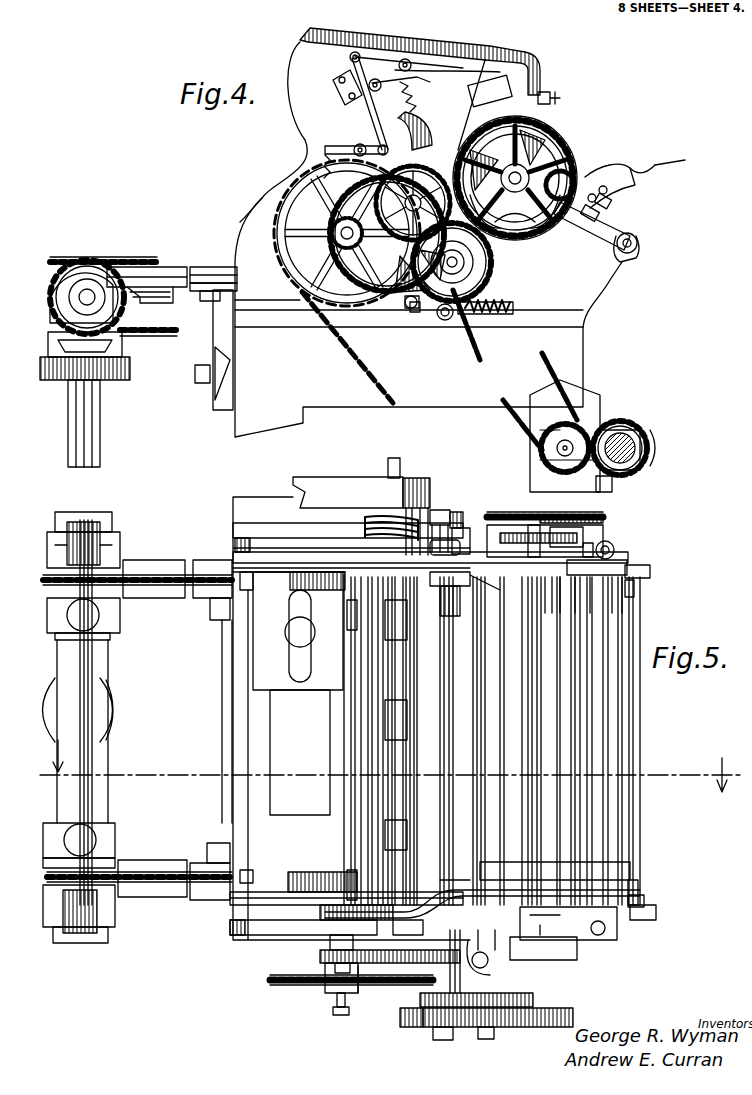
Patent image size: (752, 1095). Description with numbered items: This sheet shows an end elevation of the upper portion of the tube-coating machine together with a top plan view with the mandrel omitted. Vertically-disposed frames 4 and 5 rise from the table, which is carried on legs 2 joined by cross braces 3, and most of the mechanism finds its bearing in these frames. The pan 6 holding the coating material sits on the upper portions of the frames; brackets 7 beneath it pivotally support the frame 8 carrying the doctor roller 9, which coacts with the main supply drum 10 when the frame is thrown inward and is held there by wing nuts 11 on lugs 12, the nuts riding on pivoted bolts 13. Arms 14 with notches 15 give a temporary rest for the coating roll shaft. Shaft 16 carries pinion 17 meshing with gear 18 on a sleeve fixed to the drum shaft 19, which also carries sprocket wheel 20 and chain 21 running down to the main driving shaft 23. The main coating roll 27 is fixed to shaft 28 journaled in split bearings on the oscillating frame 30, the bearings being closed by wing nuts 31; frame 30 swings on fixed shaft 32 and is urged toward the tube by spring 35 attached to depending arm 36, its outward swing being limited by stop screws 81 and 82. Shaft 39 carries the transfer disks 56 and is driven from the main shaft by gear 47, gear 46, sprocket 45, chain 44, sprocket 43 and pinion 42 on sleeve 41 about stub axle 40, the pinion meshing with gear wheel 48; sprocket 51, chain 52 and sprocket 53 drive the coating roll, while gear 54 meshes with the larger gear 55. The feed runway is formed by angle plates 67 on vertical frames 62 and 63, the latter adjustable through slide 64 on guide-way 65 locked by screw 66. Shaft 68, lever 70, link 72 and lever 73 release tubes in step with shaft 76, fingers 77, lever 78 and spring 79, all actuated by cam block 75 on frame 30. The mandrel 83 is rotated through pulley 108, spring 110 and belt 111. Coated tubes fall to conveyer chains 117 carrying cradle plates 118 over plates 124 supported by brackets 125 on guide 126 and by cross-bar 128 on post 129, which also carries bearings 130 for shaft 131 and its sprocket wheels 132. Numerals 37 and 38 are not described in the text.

In FIG. 4, the legs or columns 2 is at (598, 490).
In FIG. 5, the cross braces 3 is at (390, 766).
In FIG. 5, the frame or casting 4 is at (262, 553).
In FIG. 4, the frame or casting 5 is at (606, 284).
In FIG. 5, the frame or casting 5 is at (253, 920).
In FIG. 4, the pan 6 is at (588, 178).
In FIG. 5, the pan 6 is at (582, 636).
In FIG. 4, the brackets 7 is at (637, 252).
In FIG. 5, the brackets 7 is at (636, 884).
In FIG. 4, the frame 8 is at (622, 228).
In FIG. 5, the frame 8 is at (598, 708).
In FIG. 5, the doctor roller 9 is at (573, 741).
In FIG. 4, the main supply drum or roll 10 is at (528, 164).
In FIG. 4, the wing nuts 11 is at (612, 206).
In FIG. 4, the lugs 12 is at (329, 226).
In FIG. 5, the lugs 12 is at (616, 551).
In FIG. 4, the bolts 13 is at (606, 192).
In FIG. 4, the arms 14 is at (628, 165).
In FIG. 5, the arms 14 is at (636, 584).
In FIG. 4, the notch 15 is at (670, 157).
In FIG. 5, the notch 15 is at (644, 565).
In FIG. 5, the shaft 16 is at (524, 741).
In FIG. 5, the pinion 17 is at (583, 546).
In FIG. 5, the gear 18 is at (502, 524).
In FIG. 4, the roll shaft 19 is at (568, 176).
In FIG. 5, the roll shaft 19 is at (543, 948).
In FIG. 5, the sprocket wheel 20 is at (516, 512).
In FIG. 5, the sprocket chain 21 is at (535, 525).
In FIG. 4, the main driving shaft 23 is at (630, 440).
In FIG. 5, the main coating roll 27 is at (458, 741).
In FIG. 4, the shaft 28 is at (508, 150).
In FIG. 4, the frame 30 is at (490, 91).
In FIG. 5, the frame 30 is at (503, 675).
In FIG. 4, the wing nuts 31 is at (452, 262).
In FIG. 5, the wing nuts 31 is at (455, 754).
In FIG. 4, the fixed shaft 32 is at (432, 278).
In FIG. 5, the fixed shaft 32 is at (452, 512).
In FIG. 4, the spring 35 is at (486, 316).
In FIG. 4, the depending arm 36 is at (446, 320).
In FIG. 5, the shaft 37 is at (452, 980).
In FIG. 5, the pivot 38 is at (476, 962).
In FIG. 4, the shaft 39 is at (386, 190).
In FIG. 5, the shaft 39 is at (412, 650).
In FIG. 4, the stub axle 40 is at (282, 240).
In FIG. 5, the stub axle 40 is at (348, 1002).
In FIG. 5, the sleeve 41 is at (336, 972).
In FIG. 4, the pinion 42 is at (328, 220).
In FIG. 5, the pinion 42 is at (320, 953).
In FIG. 5, the sprocket wheel 43 is at (278, 982).
In FIG. 4, the sprocket chain 44 is at (356, 350).
In FIG. 5, the sprocket chain 44 is at (386, 986).
In FIG. 4, the small sprocket wheel 45 is at (582, 430).
In FIG. 4, the pinion or gear wheel 46 is at (572, 404).
In FIG. 4, the gear 47 is at (652, 462).
In FIG. 4, the gear wheel 48 is at (378, 268).
In FIG. 5, the gear wheel 48 is at (358, 990).
In FIG. 4, the sprocket wheel 51 is at (508, 296).
In FIG. 5, the sprocket wheel 51 is at (418, 1027).
In FIG. 4, the chain 52 is at (525, 217).
In FIG. 5, the chain 52 is at (485, 1038).
In FIG. 4, the sprocket 53 is at (482, 58).
In FIG. 5, the sprocket 53 is at (534, 999).
In FIG. 4, the gear wheel 54 is at (474, 266).
In FIG. 5, the gear wheel 54 is at (452, 1000).
In FIG. 4, the gear 55 is at (540, 222).
In FIG. 5, the gear 55 is at (540, 1027).
In FIG. 5, the disk-like members 56 is at (440, 596).
In FIG. 4, the vertical frame 62 is at (262, 196).
In FIG. 5, the vertical frame 62 is at (258, 895).
In FIG. 5, the second vertical frame 63 is at (276, 568).
In FIG. 5, the slide 64 is at (262, 690).
In FIG. 5, the guide-way 65 is at (300, 752).
In FIG. 5, the locking screw 66 is at (292, 632).
In FIG. 5, the angle plates 67 is at (336, 588).
In FIG. 4, the shaft 68 is at (361, 144).
In FIG. 4, the lever 70 is at (352, 148).
In FIG. 5, the lever 70 is at (356, 920).
In FIG. 4, the link 72 is at (338, 78).
In FIG. 5, the link 72 is at (394, 927).
In FIG. 4, the second lever 73 is at (430, 55).
In FIG. 5, the second lever 73 is at (480, 890).
In FIG. 4, the cam block 75 is at (500, 70).
In FIG. 5, the cam block 75 is at (500, 884).
In FIG. 4, the second shaft 76 is at (368, 92).
In FIG. 5, the second shaft 76 is at (378, 682).
In FIG. 5, the fingers 77 is at (392, 636).
In FIG. 4, the lever 78 is at (413, 78).
In FIG. 4, the spring 79 is at (414, 98).
In FIG. 4, the adjustable stop screw 81 is at (414, 312).
In FIG. 4, the adjustable stop screw 82 is at (546, 92).
In FIG. 5, the mandrel 83 is at (388, 466).
In FIG. 4, the pulley 108 is at (422, 116).
In FIG. 5, the pulley 108 is at (417, 478).
In FIG. 5, the spring 110 is at (362, 522).
In FIG. 5, the belt 111 is at (348, 492).
In FIG. 4, the endless conveyer chains 117 is at (209, 262).
In FIG. 5, the endless conveyer chains 117 is at (172, 562).
In FIG. 4, the thin plates 118 is at (170, 267).
In FIG. 4, the plates 124 is at (210, 283).
In FIG. 5, the plates 124 is at (206, 600).
In FIG. 4, the brackets 125 is at (218, 302).
In FIG. 4, the guide 126 is at (226, 380).
In FIG. 4, the slide-way or cross-bar 128 is at (90, 362).
In FIG. 5, the slide-way or cross-bar 128 is at (108, 680).
In FIG. 4, the post 129 is at (100, 416).
In FIG. 4, the bearings 130 is at (118, 342).
In FIG. 5, the bearings 130 is at (116, 540).
In FIG. 4, the shaft 131 is at (74, 284).
In FIG. 5, the shaft 131 is at (100, 718).
In FIG. 4, the sprocket wheels 132 is at (88, 288).
In FIG. 5, the sprocket wheels 132 is at (100, 588).